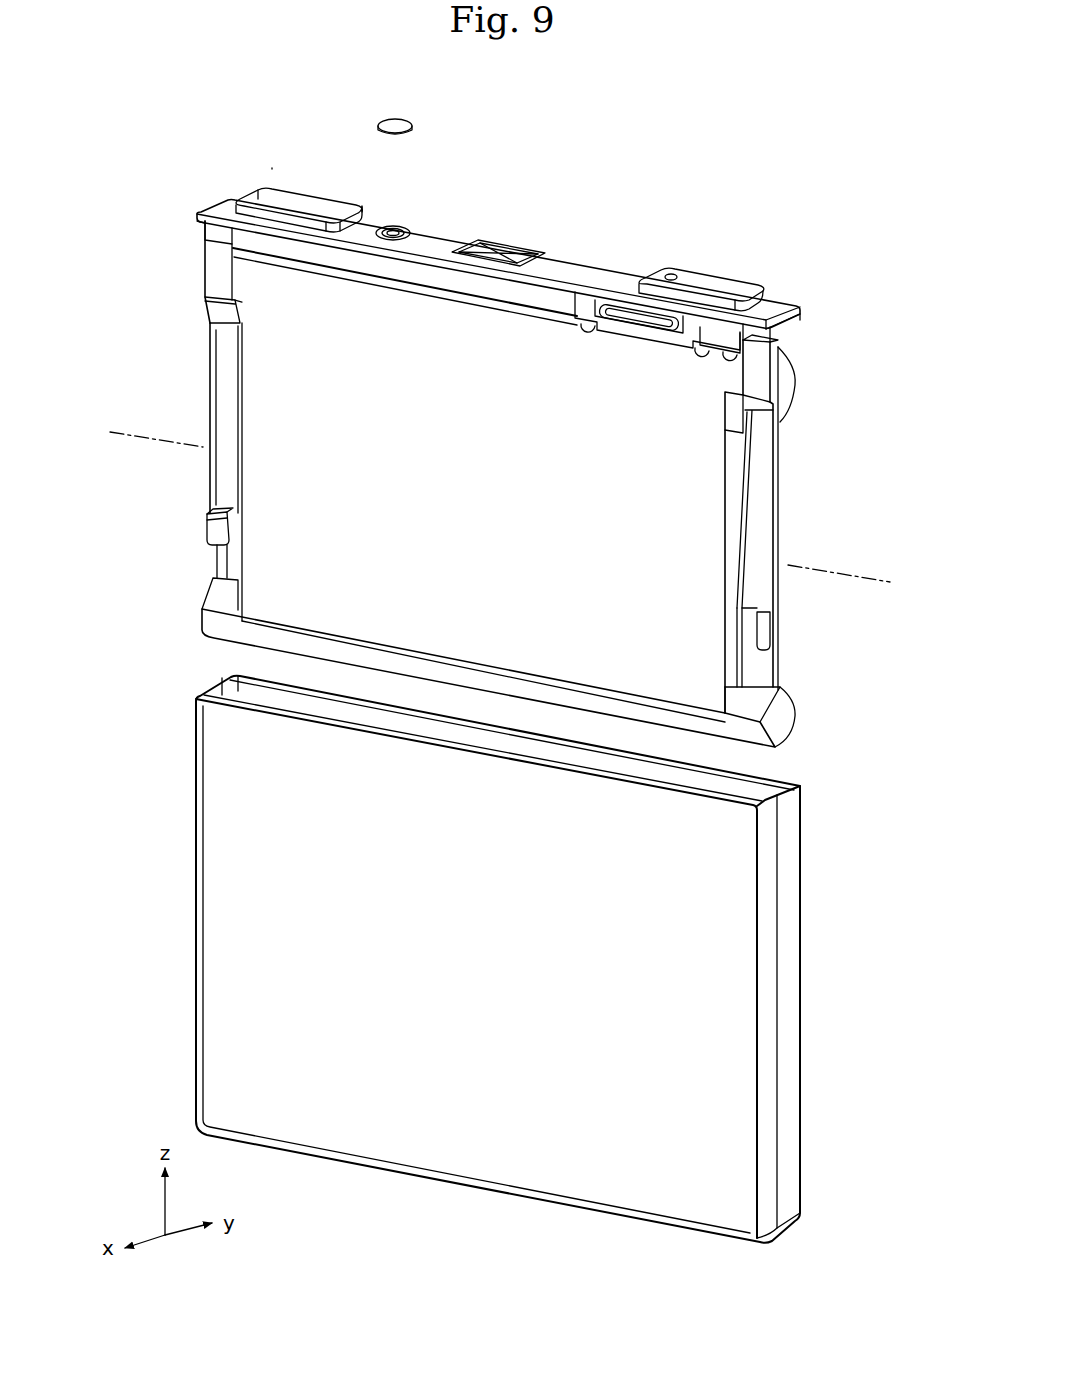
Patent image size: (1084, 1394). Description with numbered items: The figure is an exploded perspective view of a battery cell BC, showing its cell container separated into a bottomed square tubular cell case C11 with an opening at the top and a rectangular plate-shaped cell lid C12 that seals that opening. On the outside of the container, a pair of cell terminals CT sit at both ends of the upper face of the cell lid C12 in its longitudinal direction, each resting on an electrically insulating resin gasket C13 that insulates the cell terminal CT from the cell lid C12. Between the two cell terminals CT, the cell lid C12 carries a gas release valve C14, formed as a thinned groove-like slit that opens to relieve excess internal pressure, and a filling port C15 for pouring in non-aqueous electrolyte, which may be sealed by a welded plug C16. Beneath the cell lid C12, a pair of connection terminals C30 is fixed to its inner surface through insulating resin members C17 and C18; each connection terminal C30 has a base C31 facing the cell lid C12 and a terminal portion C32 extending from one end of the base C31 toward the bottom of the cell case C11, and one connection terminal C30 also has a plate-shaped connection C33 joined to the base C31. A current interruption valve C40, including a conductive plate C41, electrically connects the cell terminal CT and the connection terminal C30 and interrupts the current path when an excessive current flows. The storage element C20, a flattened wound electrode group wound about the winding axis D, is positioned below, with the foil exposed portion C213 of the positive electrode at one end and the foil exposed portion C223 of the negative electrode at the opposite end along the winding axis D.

The battery cell BC is at (719, 124).
The cell terminal CT is at (272, 170).
The cell case C11 is at (819, 863).
The cell lid C12 is at (585, 271).
The resin gasket C13 is at (250, 203).
The gas release valve C14 is at (508, 248).
The filling port C15 is at (399, 229).
The plug C16 is at (410, 123).
The insulating resin member C17 is at (220, 236).
The insulating resin member C18 is at (796, 326).
The storage element C20 is at (204, 592).
The foil exposed portion C213 is at (782, 674).
The foil exposed portion C223 is at (219, 540).
The connection terminal C30 is at (204, 275).
The base C31 is at (203, 225).
The terminal portion C32 is at (222, 420).
The connection C33 is at (612, 333).
The current interruption valve C40 is at (640, 346).
The conductive plate C41 is at (680, 343).
The winding axis D is at (498, 509).